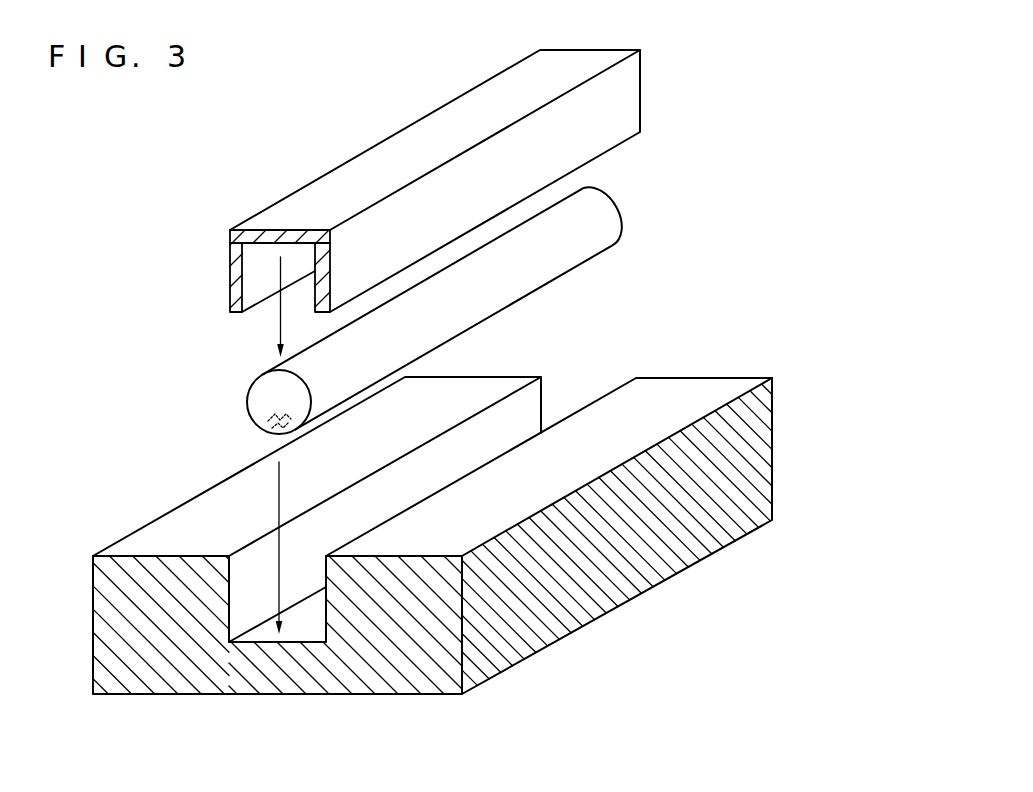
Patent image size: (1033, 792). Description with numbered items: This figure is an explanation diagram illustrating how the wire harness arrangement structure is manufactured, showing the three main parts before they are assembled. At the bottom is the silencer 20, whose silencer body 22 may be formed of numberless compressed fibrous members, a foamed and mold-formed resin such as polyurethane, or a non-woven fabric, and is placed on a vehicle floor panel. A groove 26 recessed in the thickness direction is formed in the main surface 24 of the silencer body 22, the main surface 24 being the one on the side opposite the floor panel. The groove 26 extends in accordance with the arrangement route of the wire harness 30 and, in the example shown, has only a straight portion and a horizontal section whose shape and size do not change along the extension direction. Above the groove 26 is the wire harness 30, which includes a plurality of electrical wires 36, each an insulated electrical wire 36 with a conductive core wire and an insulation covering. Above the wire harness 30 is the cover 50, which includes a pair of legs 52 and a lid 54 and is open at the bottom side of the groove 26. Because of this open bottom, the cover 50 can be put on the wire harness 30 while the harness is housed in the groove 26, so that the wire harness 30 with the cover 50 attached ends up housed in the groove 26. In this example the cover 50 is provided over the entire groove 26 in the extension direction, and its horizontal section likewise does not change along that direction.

The silencer 20 is at (432, 547).
The silencer body 22 is at (368, 683).
The main surface 24 is at (679, 390).
The groove 26 is at (293, 628).
The wire harness 30 is at (423, 314).
The electrical wire 36 is at (265, 421).
The cover 50 is at (438, 203).
The legs 52 is at (623, 108).
The lid 54 is at (407, 145).